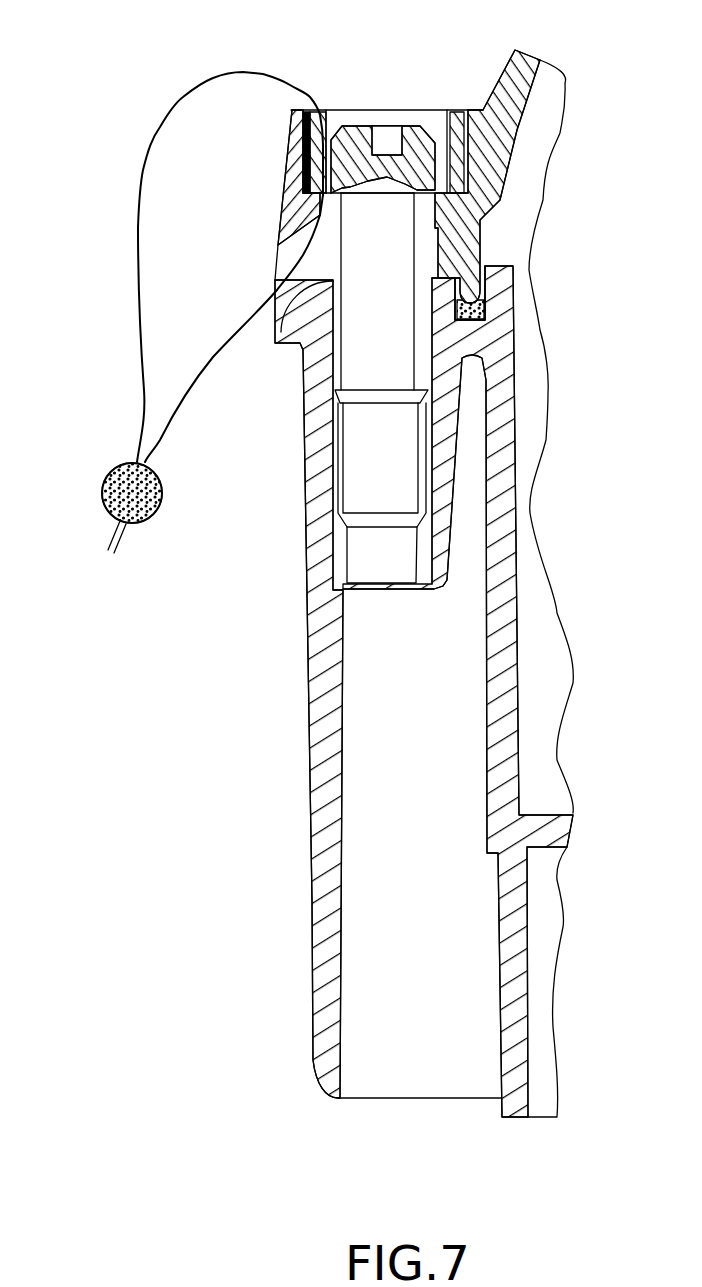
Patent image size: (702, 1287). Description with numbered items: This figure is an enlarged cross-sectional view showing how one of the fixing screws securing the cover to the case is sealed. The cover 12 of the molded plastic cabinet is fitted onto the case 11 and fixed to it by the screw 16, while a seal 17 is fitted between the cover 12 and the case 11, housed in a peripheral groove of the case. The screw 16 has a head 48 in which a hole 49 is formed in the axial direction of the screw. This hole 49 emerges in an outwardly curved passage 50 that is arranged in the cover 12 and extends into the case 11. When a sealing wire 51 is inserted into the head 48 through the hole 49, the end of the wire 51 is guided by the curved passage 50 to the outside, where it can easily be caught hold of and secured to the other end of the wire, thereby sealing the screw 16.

The case 11 is at (315, 723).
The cover 12 is at (513, 77).
The screw 16 is at (355, 368).
The seal 17 is at (486, 307).
The head 48 is at (357, 130).
The hole 49 is at (292, 150).
The outwardly curved passage 50 is at (292, 257).
The sealing wire 51 is at (145, 328).